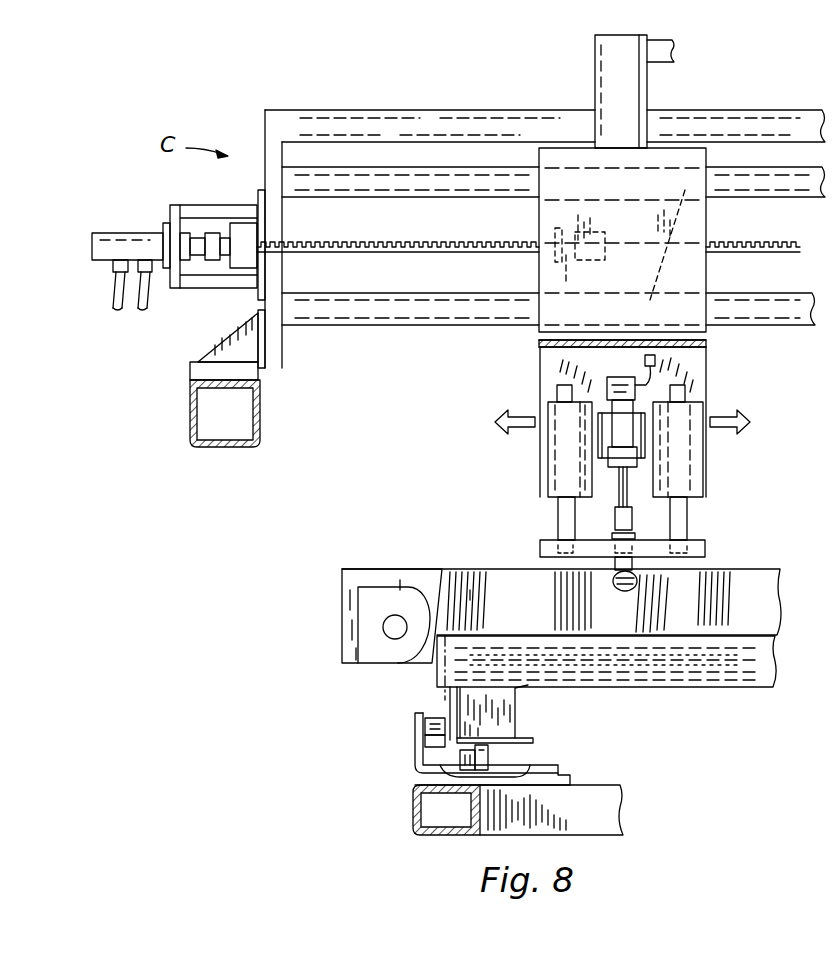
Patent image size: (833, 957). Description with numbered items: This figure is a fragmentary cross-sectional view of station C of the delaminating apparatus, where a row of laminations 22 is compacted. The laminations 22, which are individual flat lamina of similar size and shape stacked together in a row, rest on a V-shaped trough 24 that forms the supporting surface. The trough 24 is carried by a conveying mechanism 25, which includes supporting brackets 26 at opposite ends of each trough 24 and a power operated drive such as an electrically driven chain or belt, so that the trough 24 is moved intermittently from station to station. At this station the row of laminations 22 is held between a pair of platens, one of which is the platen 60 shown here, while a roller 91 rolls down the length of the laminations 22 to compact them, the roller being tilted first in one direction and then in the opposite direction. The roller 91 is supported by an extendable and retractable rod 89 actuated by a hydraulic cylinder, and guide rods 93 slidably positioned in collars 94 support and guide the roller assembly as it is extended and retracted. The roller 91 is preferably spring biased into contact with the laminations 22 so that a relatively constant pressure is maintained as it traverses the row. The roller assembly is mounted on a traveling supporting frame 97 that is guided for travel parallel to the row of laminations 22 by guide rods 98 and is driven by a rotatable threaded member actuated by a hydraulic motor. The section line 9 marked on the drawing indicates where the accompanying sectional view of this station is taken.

The section line 9- 9 is at (457, 550).
The laminations 22 is at (561, 602).
The V-shaped trough 24 is at (726, 678).
The conveying mechanism 25 is at (530, 759).
The supporting bracket 26 is at (462, 714).
The platen 60 is at (445, 598).
The extendable and retractable rod 89 is at (628, 490).
The roller 91 is at (641, 572).
The guide rods 93 is at (560, 508).
The collars 94 is at (560, 450).
The traveling supporting frame 97 is at (668, 272).
The guide rods 98 is at (478, 242).